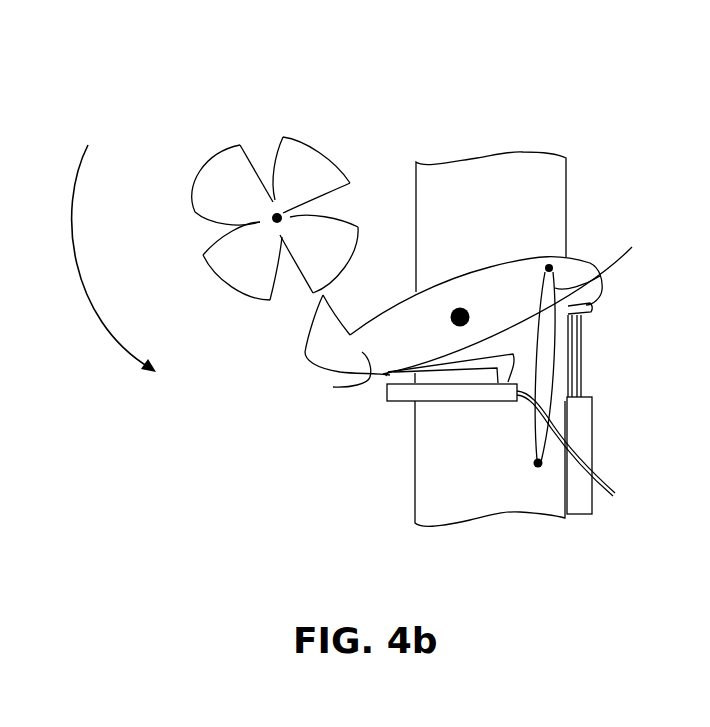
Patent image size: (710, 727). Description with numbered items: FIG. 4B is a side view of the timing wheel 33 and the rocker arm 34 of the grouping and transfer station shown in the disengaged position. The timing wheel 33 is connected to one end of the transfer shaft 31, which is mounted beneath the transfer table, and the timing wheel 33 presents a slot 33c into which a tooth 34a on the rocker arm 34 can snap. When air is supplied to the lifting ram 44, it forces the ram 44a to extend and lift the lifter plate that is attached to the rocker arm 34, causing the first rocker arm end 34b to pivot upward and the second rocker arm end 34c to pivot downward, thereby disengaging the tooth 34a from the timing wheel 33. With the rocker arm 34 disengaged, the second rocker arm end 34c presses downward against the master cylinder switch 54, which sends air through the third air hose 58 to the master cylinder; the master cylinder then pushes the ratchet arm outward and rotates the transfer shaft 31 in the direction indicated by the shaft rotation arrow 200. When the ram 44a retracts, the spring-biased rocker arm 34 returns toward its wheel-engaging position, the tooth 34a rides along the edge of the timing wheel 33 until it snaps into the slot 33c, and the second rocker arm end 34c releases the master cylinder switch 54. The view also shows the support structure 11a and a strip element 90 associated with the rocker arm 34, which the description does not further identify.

The shaft rotation arrow 200 is at (97, 258).
The timing wheel 33 is at (232, 178).
The slot 33c is at (212, 228).
The transfer shaft 31 is at (281, 214).
The support post 11a is at (515, 495).
The rocker arm 34 is at (503, 304).
The tooth 34a is at (317, 342).
The first rocker arm end 34b is at (599, 302).
The second rocker arm end 34c is at (341, 380).
The flexible strip 90 is at (595, 350).
The ram 44a is at (582, 365).
The lifting ram 44 is at (590, 441).
The master cylinder switch 54 is at (410, 392).
The third air hose 58 is at (595, 456).